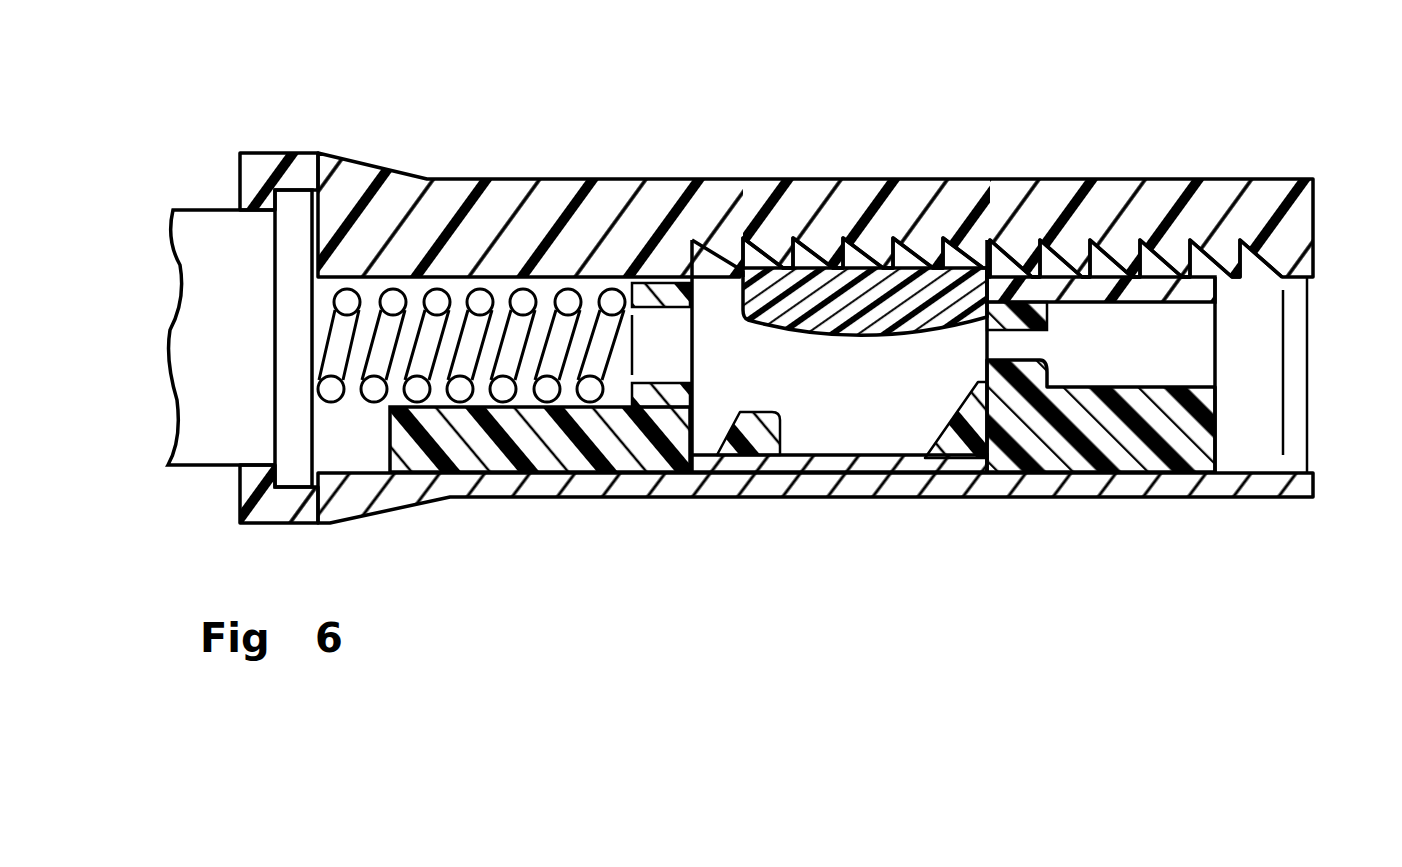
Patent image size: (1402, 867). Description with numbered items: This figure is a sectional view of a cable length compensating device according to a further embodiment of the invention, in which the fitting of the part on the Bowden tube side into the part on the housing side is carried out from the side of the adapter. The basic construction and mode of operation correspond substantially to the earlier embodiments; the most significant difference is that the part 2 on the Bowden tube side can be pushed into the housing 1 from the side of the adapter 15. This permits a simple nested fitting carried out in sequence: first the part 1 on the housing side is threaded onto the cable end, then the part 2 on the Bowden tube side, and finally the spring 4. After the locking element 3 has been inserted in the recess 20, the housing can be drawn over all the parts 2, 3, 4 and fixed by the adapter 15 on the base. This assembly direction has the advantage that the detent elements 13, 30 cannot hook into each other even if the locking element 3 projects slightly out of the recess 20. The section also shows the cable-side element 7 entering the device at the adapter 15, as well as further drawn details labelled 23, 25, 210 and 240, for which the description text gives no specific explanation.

The housing 1 is at (607, 205).
The part on the Bowden tube side 2 is at (628, 472).
The locking element 3 is at (813, 332).
The spring 4 is at (480, 300).
The piston rod 7 is at (200, 313).
The detent element 13 is at (1058, 242).
The adapter 15 is at (262, 190).
The recess 20 is at (862, 402).
The outlet chamber 23 is at (1156, 318).
The valve body 25 is at (1012, 342).
The detent element 30 is at (968, 262).
The piston lug 210 is at (706, 404).
The piston shoulder 240 is at (970, 394).